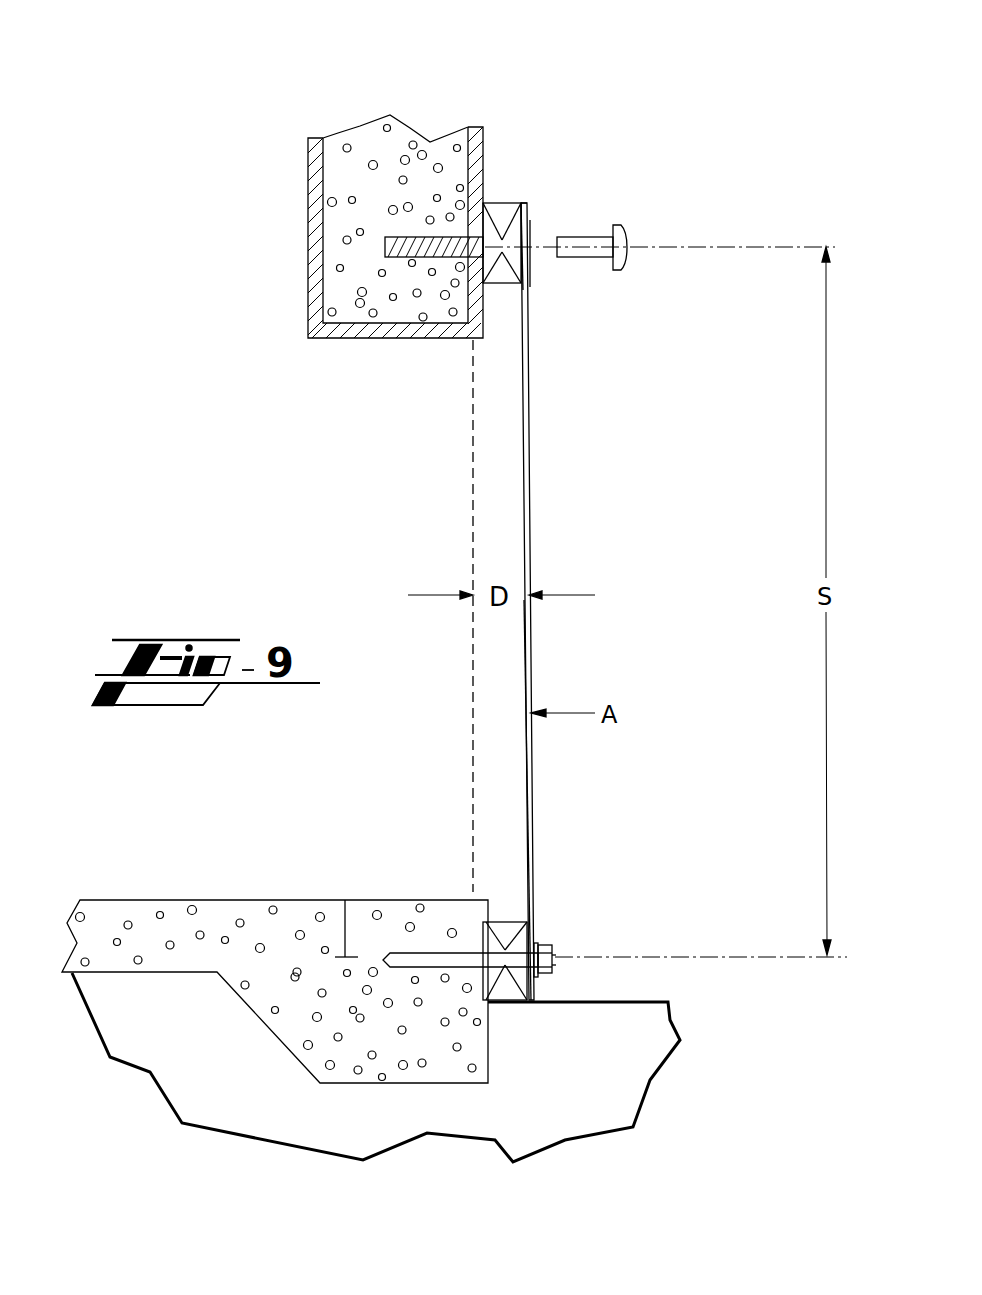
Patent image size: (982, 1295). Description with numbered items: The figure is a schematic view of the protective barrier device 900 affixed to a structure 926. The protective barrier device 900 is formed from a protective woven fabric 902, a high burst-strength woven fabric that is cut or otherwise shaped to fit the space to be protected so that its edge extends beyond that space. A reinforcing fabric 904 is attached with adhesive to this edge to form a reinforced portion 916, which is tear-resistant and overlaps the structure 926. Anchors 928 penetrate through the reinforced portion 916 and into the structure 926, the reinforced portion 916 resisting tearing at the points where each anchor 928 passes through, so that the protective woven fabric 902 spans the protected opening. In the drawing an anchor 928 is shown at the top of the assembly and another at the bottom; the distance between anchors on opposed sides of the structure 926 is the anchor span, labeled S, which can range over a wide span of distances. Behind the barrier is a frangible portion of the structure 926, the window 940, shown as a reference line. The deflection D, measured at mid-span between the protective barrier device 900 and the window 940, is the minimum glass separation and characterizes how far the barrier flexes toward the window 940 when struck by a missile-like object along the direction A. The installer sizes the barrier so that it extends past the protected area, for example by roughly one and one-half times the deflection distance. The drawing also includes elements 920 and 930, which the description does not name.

The protective barrier device 900 is at (527, 462).
The protective woven fabric 902 is at (531, 826).
The reinforcing fabric 904 is at (527, 205).
The reinforced portion 916 is at (545, 273).
The bolt 920 is at (625, 233).
The structure 926 is at (500, 153).
The anchor 928 is at (620, 990).
The anchoring system 930 is at (205, 378).
The window 940 is at (472, 530).